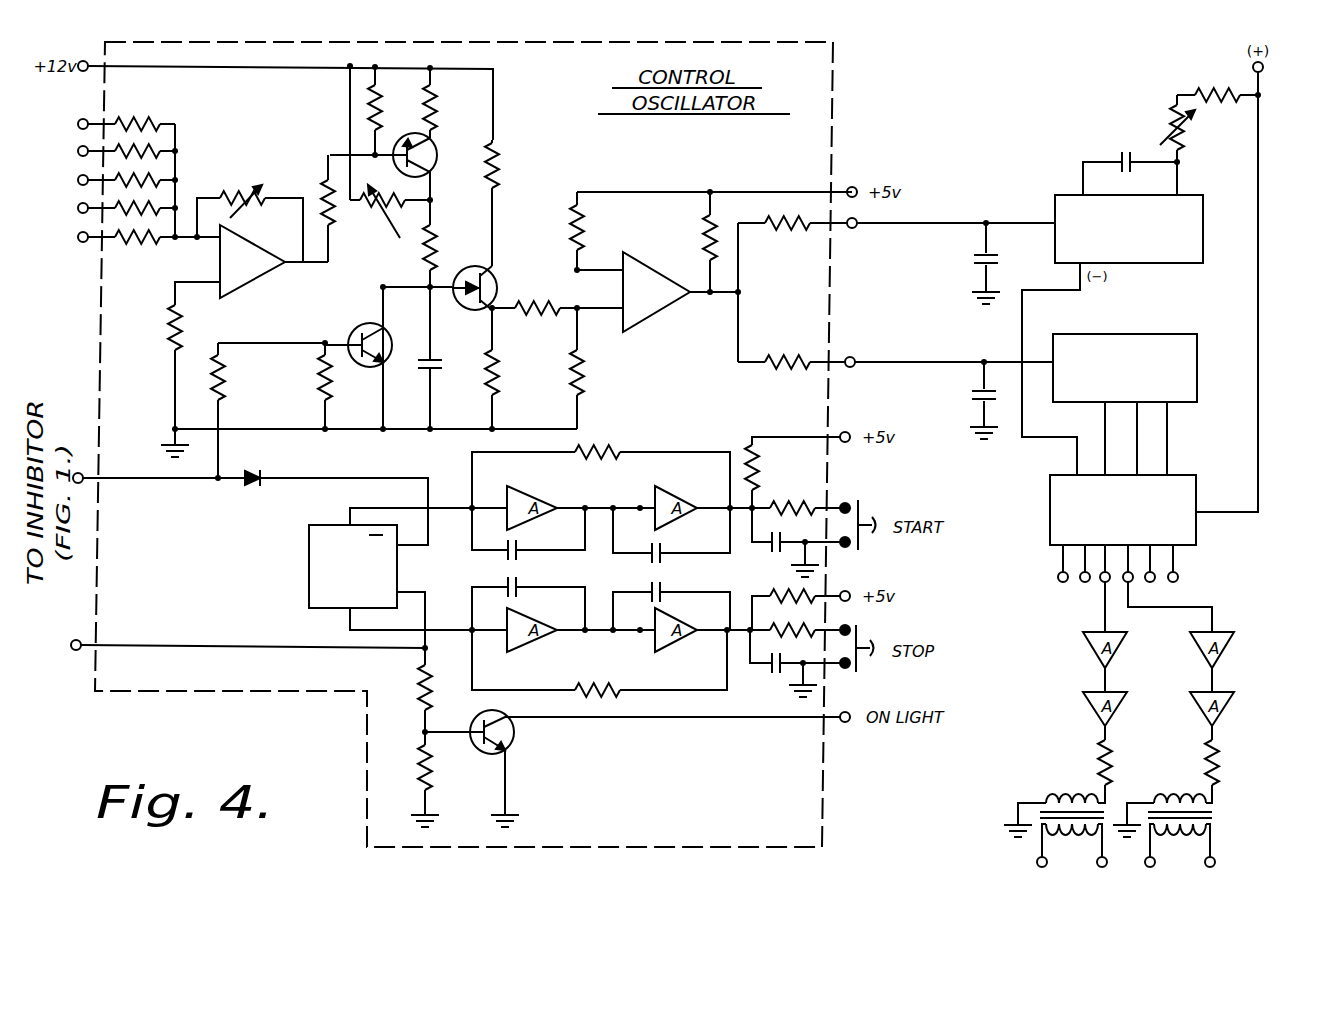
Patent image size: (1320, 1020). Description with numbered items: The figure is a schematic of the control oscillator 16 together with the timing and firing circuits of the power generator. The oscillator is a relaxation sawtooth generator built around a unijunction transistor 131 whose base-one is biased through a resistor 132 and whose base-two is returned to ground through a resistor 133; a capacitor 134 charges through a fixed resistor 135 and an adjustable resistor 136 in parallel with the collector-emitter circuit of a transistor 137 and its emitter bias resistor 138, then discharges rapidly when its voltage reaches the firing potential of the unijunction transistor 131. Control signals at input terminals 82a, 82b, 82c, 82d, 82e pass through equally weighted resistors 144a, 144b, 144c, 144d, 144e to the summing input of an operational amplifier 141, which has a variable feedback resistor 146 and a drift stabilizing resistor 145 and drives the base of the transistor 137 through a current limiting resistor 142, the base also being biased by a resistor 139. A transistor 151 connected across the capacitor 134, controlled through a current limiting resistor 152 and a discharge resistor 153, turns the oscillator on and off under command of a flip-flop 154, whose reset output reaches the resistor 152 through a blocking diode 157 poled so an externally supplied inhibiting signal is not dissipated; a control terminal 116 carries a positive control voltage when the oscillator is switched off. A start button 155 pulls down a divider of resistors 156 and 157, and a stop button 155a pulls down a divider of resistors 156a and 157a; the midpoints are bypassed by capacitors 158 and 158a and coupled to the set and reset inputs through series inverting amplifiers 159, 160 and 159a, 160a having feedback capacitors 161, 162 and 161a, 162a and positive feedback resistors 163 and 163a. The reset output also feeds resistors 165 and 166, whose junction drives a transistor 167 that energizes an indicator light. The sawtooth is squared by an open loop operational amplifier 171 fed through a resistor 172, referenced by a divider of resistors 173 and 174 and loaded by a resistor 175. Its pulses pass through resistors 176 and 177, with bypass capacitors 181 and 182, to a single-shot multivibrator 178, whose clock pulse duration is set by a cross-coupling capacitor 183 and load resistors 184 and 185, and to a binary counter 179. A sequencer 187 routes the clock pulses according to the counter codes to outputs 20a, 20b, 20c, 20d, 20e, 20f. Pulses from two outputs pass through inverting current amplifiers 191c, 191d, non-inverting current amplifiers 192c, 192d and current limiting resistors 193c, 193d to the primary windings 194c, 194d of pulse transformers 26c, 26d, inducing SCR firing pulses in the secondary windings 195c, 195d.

The control oscillator 16 is at (838, 108).
The input terminal 82a is at (80, 119).
The input terminal 82b is at (80, 146).
The input terminal 82c is at (80, 175).
The input terminal 82d is at (79, 208).
The input terminal 82e is at (80, 242).
The equally weighted resistor 144a is at (160, 124).
The equally weighted resistor 144b is at (172, 152).
The equally weighted resistor 144c is at (155, 181).
The equally weighted resistor 144d is at (155, 209).
The equally weighted resistor 144e is at (140, 240).
The operational amplifier 141 is at (250, 282).
The feedback resistor 146 is at (266, 200).
The current limiting resistor 142 is at (326, 185).
The drift stabilizing resistor 145 is at (173, 318).
The bias resistor 139 is at (368, 118).
The emitter bias resistor 138 is at (440, 110).
The transistor 137 is at (437, 150).
The adjustable resistor 136 is at (365, 205).
The fixed resistor 135 is at (432, 245).
The resistor 132 is at (500, 175).
The unijunction transistor 131 is at (494, 270).
The capacitor 134 is at (440, 355).
The resistor 133 is at (496, 372).
The transistor 151 is at (352, 325).
The current limiting resistor 152 is at (225, 380).
The resistor 153 is at (320, 388).
The resistor 172 is at (522, 316).
The resistor 173 is at (585, 228).
The resistor 174 is at (585, 380).
The load resistor 175 is at (707, 230).
The open loop operational amplifier 171 is at (655, 312).
The resistor 176 is at (772, 230).
The resistor 177 is at (790, 355).
The bypass capacitor 181 is at (975, 258).
The bypass capacitor 182 is at (972, 392).
The single-shot multivibrator 178 is at (1055, 198).
The cross-coupling capacitor 183 is at (1120, 155).
The load resistor 184 is at (1170, 120).
The load resistor 185 is at (1218, 90).
The binary counter 179 is at (1148, 334).
The sequencer 187 is at (1188, 475).
The sequencer output 20a is at (1057, 577).
The sequencer output 20b is at (1080, 581).
The sequencer output 20c is at (1102, 584).
The sequencer output 20d is at (1130, 587).
The sequencer output 20e is at (1155, 581).
The sequencer output 20f is at (1178, 577).
The inverting current amplifier 191c is at (1090, 650).
The inverting current amplifier 191d is at (1228, 648).
The non-inverting current amplifier 192c is at (1088, 706).
The non-inverting current amplifier 192d is at (1228, 706).
The current limiting resistor 193c is at (1098, 762).
The current limiting resistor 193d is at (1222, 765).
The primary winding 194c is at (1076, 795).
The primary winding 194d is at (1185, 795).
The secondary winding 195c is at (1072, 842).
The secondary winding 195d is at (1180, 842).
The pulse transformer 26c is at (1012, 805).
The pulse transformer 26d is at (1222, 812).
The blocking diode 157 is at (248, 488).
The flip-flop circuit 154 is at (308, 570).
The control terminal 116 is at (76, 640).
The inverting amplifier 159 is at (531, 497).
The inverting amplifier 160 is at (674, 500).
The feedback capacitor 161 is at (505, 552).
The feedback capacitor 161a is at (507, 588).
The feedback capacitor 162 is at (650, 545).
The feedback capacitor 162a is at (648, 590).
The feedback resistor 163 is at (600, 447).
The feedback resistor 163a is at (605, 696).
The inverting amplifier 159a is at (540, 640).
The inverting amplifier 160a is at (673, 645).
The resistor 156 is at (756, 450).
The a.c. bypass capacitor 158 is at (772, 550).
The start button 155 is at (864, 508).
The resistor 156a is at (825, 594).
The resistor 157a is at (785, 629).
The a.c. bypass capacitor 158a is at (775, 672).
The stop button 155a is at (866, 655).
The resistor 165 is at (420, 680).
The resistor 166 is at (433, 770).
The transistor 167 is at (514, 740).